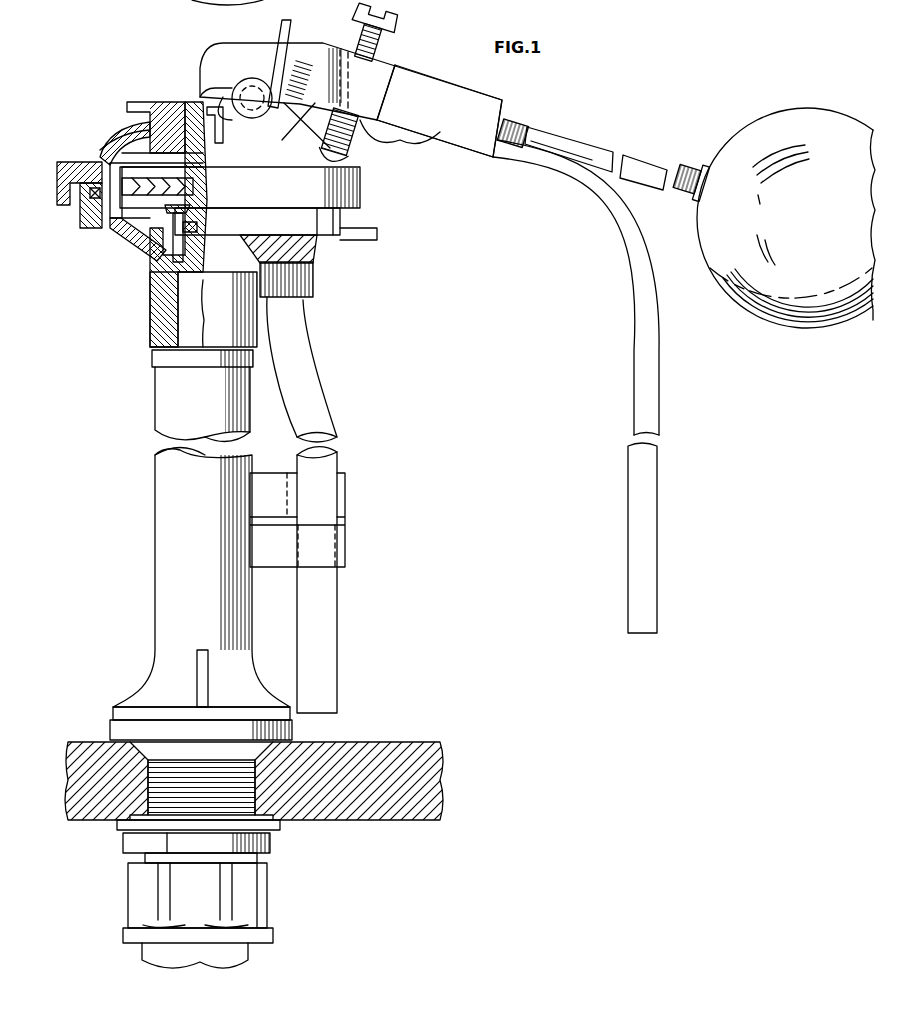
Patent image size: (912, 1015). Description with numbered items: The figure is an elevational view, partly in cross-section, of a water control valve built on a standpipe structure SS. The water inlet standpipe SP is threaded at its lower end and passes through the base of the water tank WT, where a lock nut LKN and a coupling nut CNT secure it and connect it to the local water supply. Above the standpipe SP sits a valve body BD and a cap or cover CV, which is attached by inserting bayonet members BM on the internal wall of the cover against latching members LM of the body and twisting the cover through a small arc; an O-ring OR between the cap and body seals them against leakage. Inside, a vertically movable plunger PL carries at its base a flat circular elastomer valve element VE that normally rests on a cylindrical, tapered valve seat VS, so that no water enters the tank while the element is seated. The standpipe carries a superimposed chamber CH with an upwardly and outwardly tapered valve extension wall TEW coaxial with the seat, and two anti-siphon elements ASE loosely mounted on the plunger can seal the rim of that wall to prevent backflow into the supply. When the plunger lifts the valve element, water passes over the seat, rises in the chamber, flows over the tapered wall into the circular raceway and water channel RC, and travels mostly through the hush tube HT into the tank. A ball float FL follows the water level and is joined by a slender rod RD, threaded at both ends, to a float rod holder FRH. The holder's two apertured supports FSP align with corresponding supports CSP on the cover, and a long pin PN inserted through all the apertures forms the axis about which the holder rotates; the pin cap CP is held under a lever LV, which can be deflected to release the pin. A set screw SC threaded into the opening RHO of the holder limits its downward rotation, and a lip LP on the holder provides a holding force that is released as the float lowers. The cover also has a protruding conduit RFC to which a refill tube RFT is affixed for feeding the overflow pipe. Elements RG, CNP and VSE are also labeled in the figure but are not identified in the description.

The bayonet member BM is at (177, 0).
The pin cap CP is at (255, 78).
The apertured supports of float rod holder FSP is at (276, 55).
The set screw SC is at (395, 17).
The pin PN is at (224, 68).
The lip LP is at (200, 88).
The lever LV is at (300, 62).
The threaded opening RHO is at (378, 72).
The cap nut plate CNP is at (142, 100).
The apertured supports of cover CSP is at (284, 102).
The cap or cover CV is at (130, 137).
The ring gasket RG is at (97, 147).
The latching member LM is at (63, 168).
The anti-siphon elements ASE is at (207, 173).
The protruding conduit RFC is at (357, 162).
The float rod holder FRH is at (482, 142).
The float rod RD is at (557, 140).
The plunger PL is at (205, 194).
The O-ring OR is at (92, 195).
The valve seat VSE is at (200, 218).
The raceway and water channel RC is at (110, 210).
The tapered valve extension wall TEW is at (145, 237).
The elastomer valve element VE is at (205, 241).
The chamber CH is at (163, 252).
The valve seat VS is at (198, 258).
The valve body BD is at (150, 302).
The standpipe structure SS is at (142, 354).
The float FL is at (780, 318).
The hush tube HT is at (328, 468).
The standpipe SP is at (167, 487).
The refill tube RFT is at (657, 516).
The water tank WT is at (393, 740).
The lock nut LKN is at (268, 845).
The coupling nut CNT is at (257, 898).